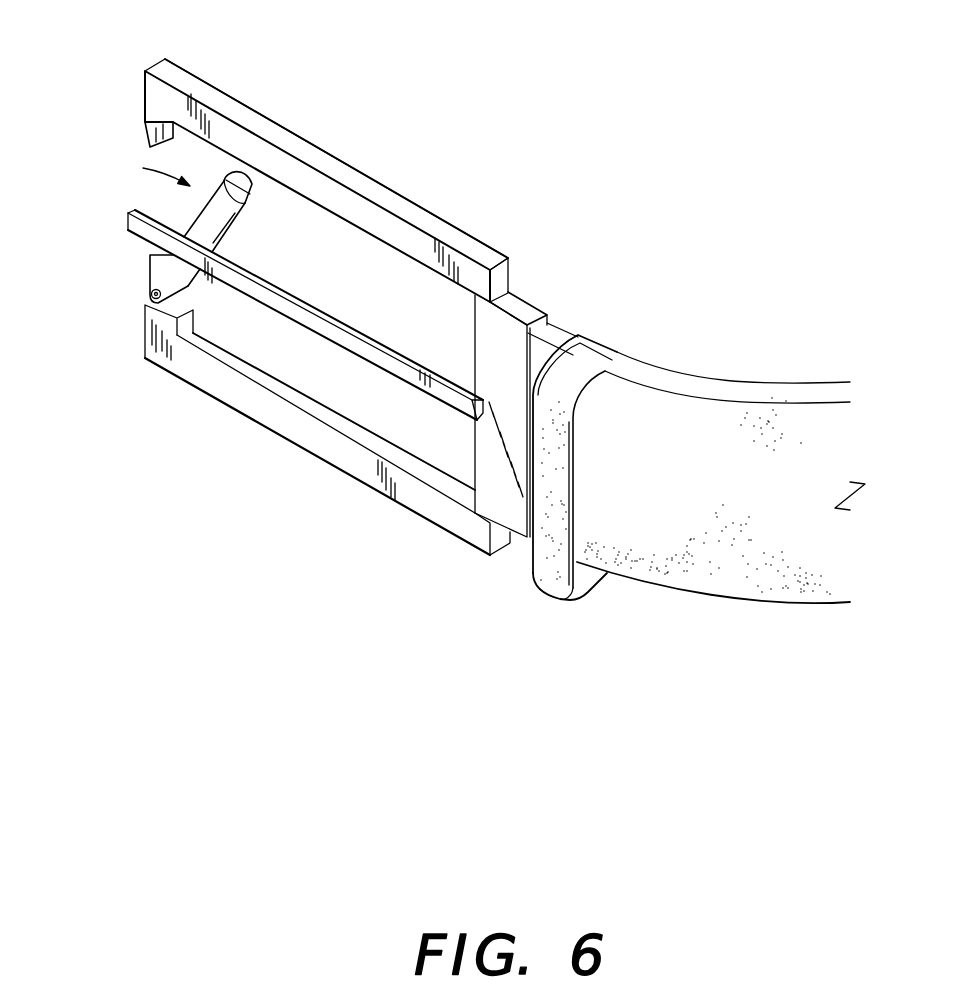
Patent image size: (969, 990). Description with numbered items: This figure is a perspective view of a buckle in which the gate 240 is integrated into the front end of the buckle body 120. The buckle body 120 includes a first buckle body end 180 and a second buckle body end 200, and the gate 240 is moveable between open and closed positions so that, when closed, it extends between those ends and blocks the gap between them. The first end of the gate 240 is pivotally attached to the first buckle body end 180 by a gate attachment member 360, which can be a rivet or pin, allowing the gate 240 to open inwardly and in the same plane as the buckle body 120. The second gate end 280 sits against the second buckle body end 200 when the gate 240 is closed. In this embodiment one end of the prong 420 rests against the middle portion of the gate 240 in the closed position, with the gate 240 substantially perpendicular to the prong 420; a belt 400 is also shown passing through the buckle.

The buckle body 120 is at (360, 173).
The second buckle body end 200 is at (148, 137).
The gate 240 is at (195, 218).
The second gate end 280 is at (240, 203).
The first buckle body end 180 is at (149, 262).
The gate attachment member 360 is at (152, 293).
The prong 420 is at (317, 312).
The belt 400 is at (738, 489).